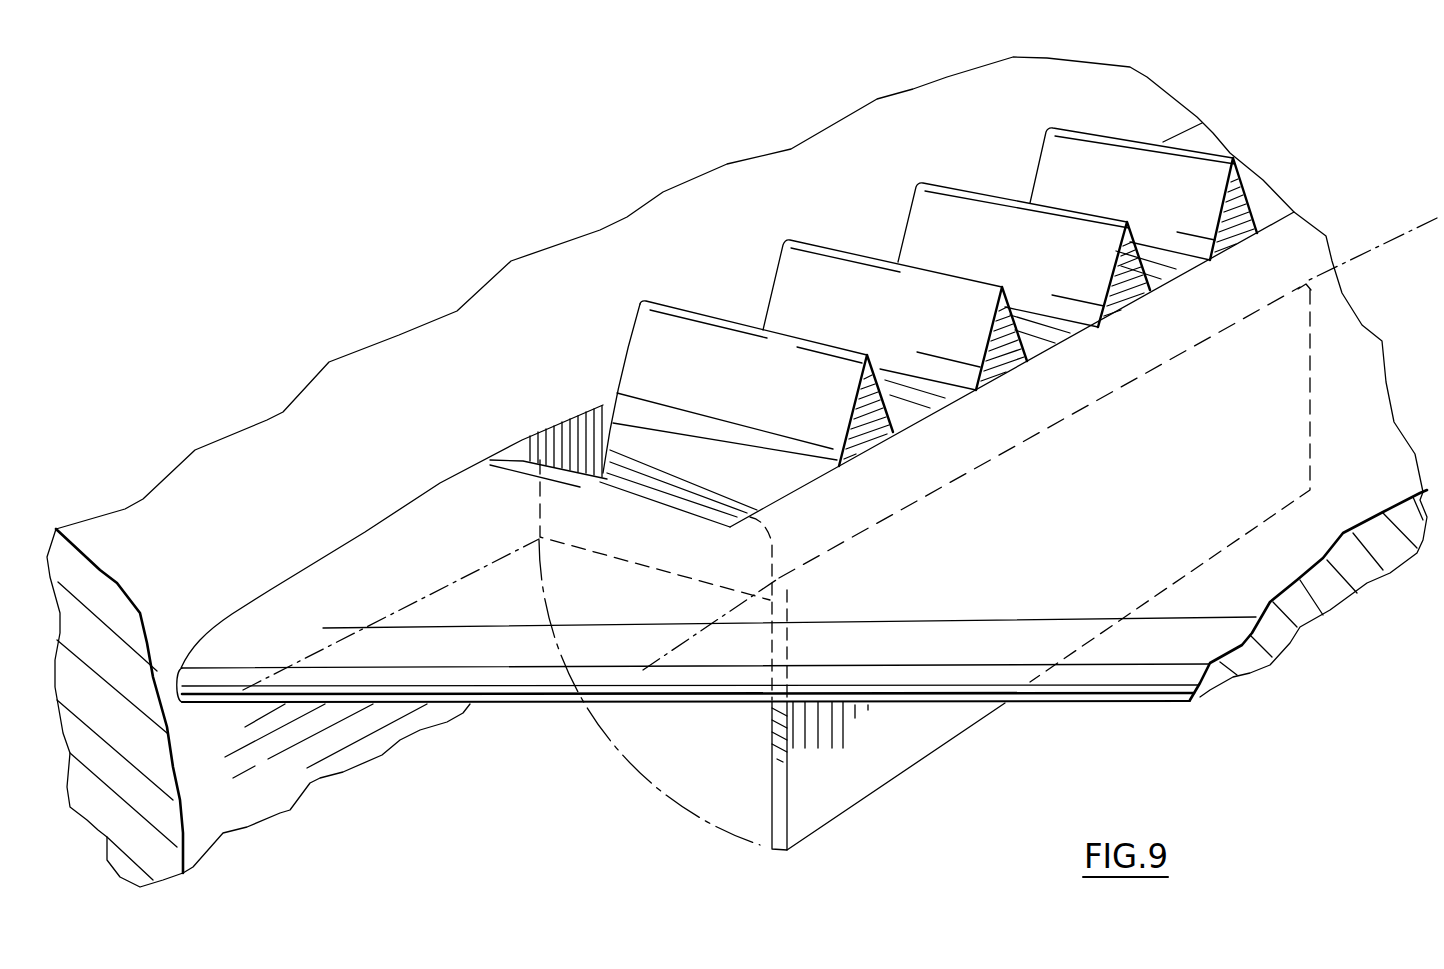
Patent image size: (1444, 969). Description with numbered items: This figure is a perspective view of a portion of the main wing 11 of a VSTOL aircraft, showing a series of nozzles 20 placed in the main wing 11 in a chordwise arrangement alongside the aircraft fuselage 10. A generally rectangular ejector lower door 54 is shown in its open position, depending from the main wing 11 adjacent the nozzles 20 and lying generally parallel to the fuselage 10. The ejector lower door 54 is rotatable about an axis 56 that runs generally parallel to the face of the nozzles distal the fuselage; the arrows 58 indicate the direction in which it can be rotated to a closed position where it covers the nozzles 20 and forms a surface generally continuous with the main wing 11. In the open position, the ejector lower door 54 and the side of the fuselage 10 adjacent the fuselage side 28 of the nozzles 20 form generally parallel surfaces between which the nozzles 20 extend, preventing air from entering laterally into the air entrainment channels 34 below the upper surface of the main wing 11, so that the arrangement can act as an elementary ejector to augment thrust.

The aircraft fuselage 10 is at (223, 820).
The main wing 11 is at (1130, 684).
The nozzles 20 is at (678, 303).
The fuselage side of the nozzles 28 is at (627, 345).
The air entrainment channels 34 is at (733, 307).
The ejector lower door 54 is at (850, 809).
The axis 56 is at (1343, 270).
The arrows 58 is at (637, 772).